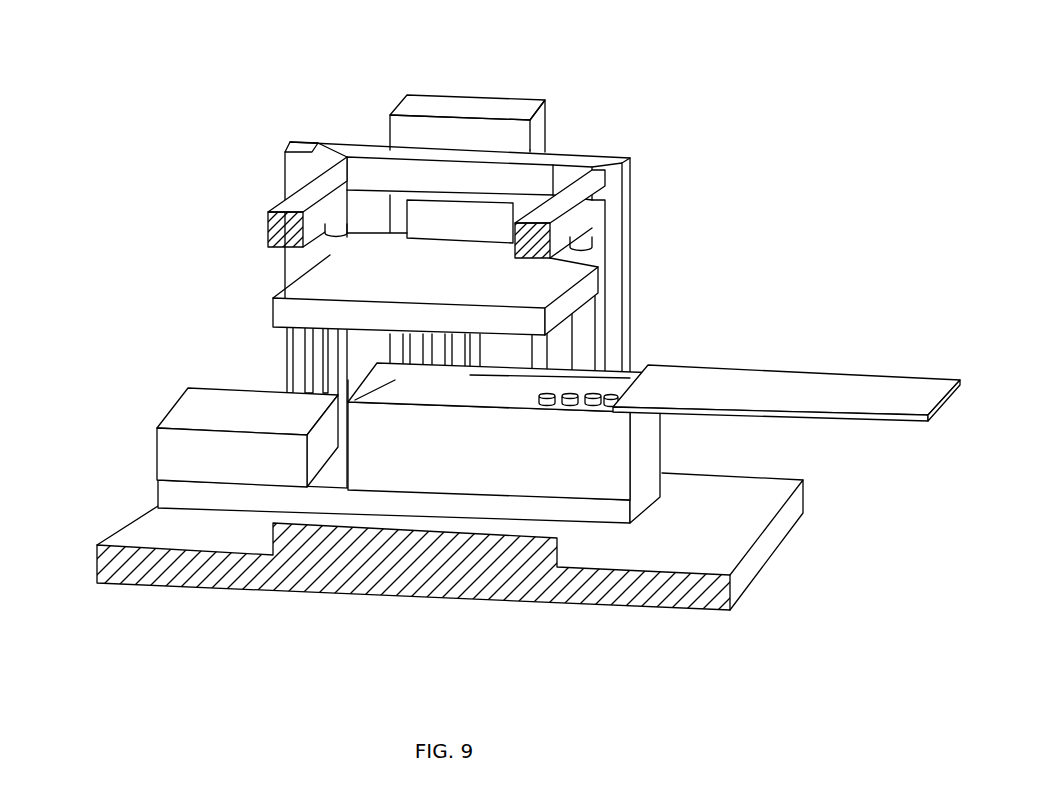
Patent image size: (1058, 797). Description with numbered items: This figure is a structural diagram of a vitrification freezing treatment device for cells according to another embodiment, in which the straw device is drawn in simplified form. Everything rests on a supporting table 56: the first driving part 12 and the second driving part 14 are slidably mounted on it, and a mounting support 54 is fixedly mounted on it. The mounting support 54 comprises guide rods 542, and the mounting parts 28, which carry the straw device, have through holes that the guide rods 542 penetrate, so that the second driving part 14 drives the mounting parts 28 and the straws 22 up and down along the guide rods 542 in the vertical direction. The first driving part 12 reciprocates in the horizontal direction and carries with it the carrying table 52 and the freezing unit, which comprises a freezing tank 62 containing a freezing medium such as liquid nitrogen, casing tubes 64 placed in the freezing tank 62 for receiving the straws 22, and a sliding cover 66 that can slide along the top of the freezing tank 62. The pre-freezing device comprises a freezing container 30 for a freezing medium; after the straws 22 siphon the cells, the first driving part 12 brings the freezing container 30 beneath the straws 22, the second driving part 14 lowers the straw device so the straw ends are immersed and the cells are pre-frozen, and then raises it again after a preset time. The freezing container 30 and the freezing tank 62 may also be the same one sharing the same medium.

The second driving part 14 is at (512, 105).
The guide rod 542 is at (345, 221).
The mounting support 54 is at (298, 193).
The mounting part 28 is at (342, 284).
The straw 22 is at (454, 351).
The carrying table 52 is at (233, 419).
The supporting table 56 is at (163, 537).
The first driving part 12 is at (260, 494).
The freezing container 30 is at (402, 402).
The casing tube 64 is at (599, 405).
The freezing tank 62 is at (609, 444).
The sliding cover 66 is at (686, 372).